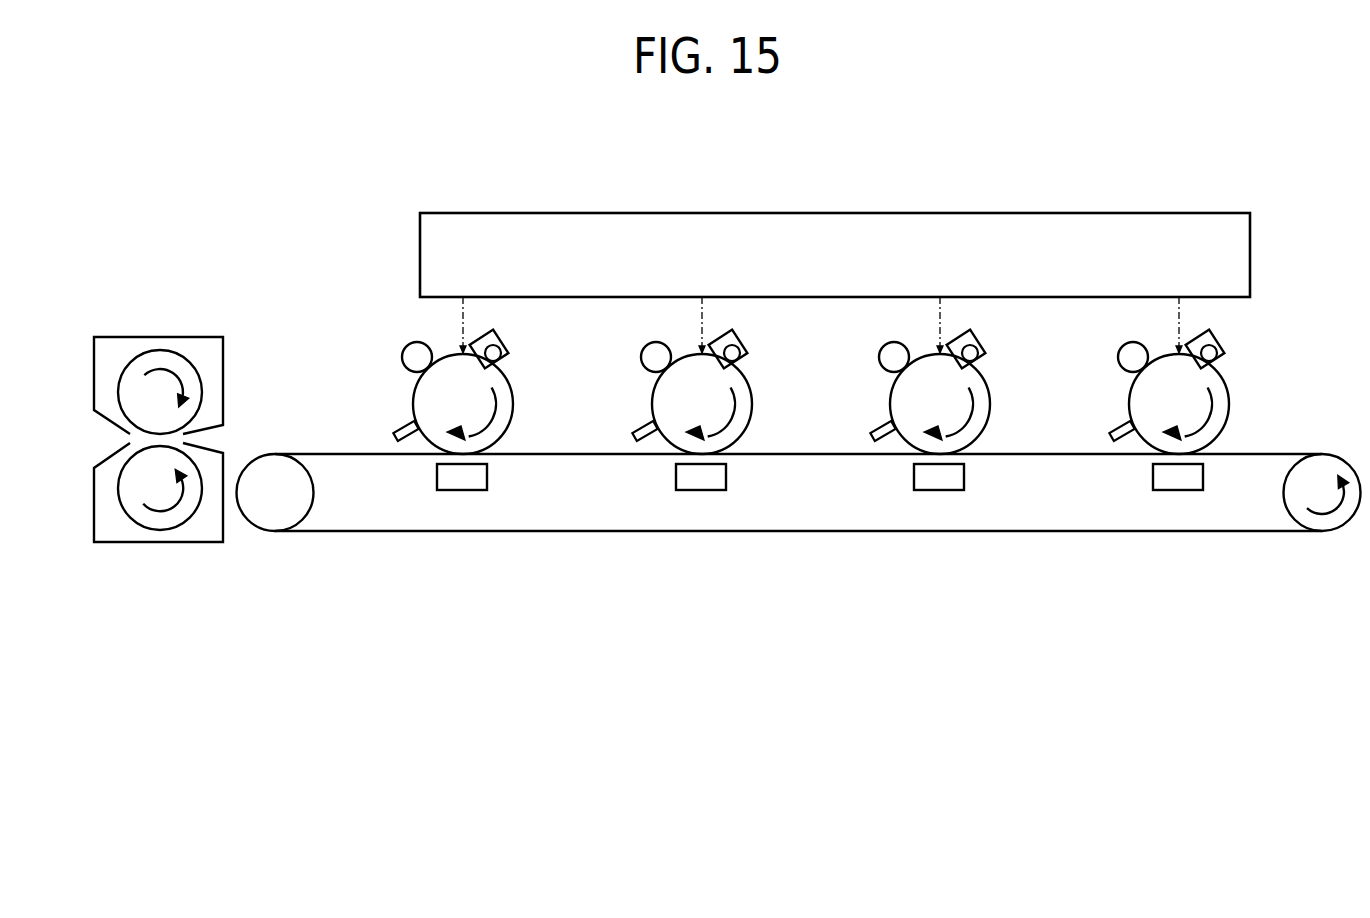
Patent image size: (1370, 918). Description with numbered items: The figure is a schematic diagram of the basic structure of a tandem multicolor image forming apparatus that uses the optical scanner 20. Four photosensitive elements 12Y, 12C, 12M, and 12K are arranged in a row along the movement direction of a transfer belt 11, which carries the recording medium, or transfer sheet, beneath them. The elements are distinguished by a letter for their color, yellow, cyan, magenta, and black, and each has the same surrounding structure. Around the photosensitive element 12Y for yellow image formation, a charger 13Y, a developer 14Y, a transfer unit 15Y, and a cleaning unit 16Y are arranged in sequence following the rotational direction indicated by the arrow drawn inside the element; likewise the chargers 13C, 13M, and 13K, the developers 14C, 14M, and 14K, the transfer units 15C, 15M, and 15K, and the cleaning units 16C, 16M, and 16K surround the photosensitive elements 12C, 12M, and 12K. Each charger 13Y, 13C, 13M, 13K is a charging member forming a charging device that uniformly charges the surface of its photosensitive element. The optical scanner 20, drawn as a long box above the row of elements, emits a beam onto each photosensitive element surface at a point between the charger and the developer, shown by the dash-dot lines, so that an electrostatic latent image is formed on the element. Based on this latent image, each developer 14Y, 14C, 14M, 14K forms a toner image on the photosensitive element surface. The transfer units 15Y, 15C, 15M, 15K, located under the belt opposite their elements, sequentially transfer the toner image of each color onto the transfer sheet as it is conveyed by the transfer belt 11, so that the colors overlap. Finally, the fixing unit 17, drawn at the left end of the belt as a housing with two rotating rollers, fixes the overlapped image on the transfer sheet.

The optical scanner 20 is at (833, 213).
The fixing unit 17 is at (158, 337).
The transfer belt 11 is at (845, 531).
The photosensitive element 12K is at (422, 397).
The photosensitive element 12M is at (673, 404).
The photosensitive element 12C is at (911, 404).
The photosensitive element 12Y is at (1150, 404).
The charger 13K is at (416, 348).
The charger 13M is at (652, 339).
The charger 13C is at (890, 339).
The charger 13Y is at (1129, 339).
The developer 14K is at (499, 335).
The developer 14M is at (752, 337).
The developer 14C is at (990, 337).
The developer 14Y is at (1229, 337).
The transfer unit 15K is at (482, 476).
The transfer unit 15M is at (731, 481).
The transfer unit 15C is at (969, 481).
The transfer unit 15Y is at (1208, 481).
The cleaning unit 16K is at (397, 427).
The cleaning unit 16M is at (616, 425).
The cleaning unit 16C is at (854, 425).
The cleaning unit 16Y is at (1093, 425).